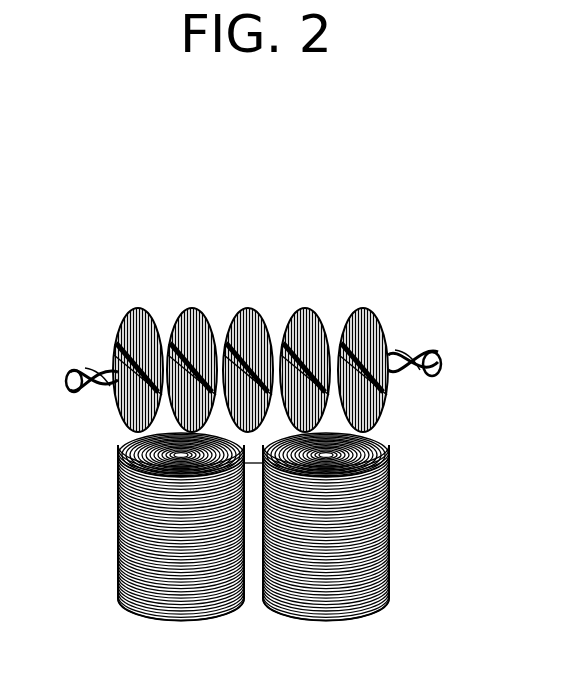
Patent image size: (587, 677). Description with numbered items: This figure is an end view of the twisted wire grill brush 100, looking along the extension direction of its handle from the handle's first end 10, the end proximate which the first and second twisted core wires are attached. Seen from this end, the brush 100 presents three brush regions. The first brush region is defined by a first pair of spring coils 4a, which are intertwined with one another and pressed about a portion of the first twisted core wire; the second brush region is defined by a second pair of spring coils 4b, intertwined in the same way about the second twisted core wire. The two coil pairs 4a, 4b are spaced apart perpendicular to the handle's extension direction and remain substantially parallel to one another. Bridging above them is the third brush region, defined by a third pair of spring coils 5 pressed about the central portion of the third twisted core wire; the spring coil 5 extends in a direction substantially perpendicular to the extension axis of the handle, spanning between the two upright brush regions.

The twisted wire grill brush 100 is at (275, 167).
The third pair of spring coils 5 is at (272, 300).
The first pair of spring coils 4a is at (390, 498).
The second pair of spring coils 4b is at (118, 521).
The first end 10 is at (251, 463).